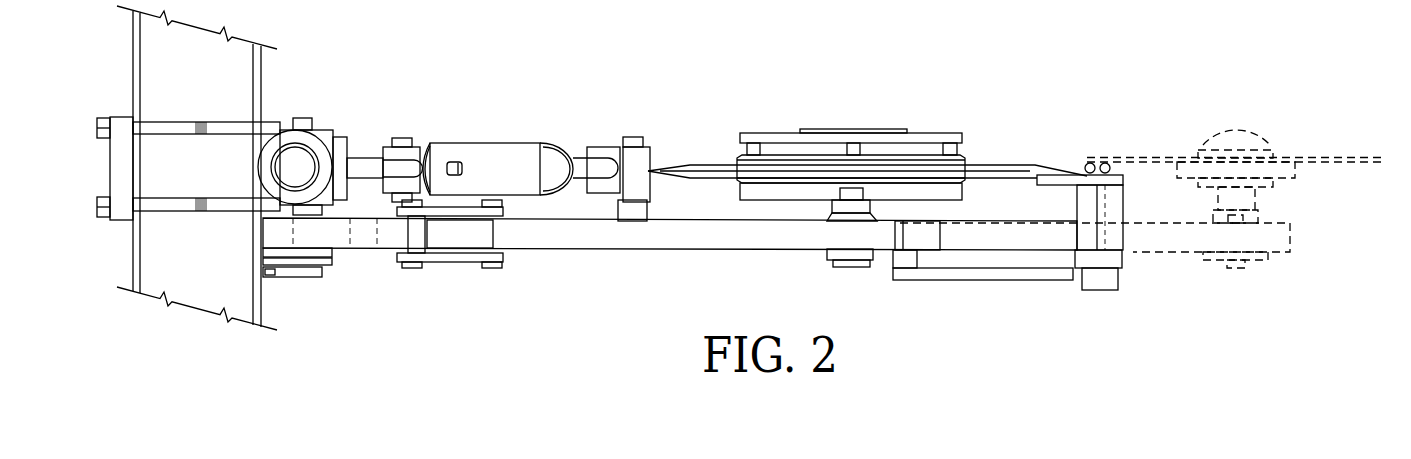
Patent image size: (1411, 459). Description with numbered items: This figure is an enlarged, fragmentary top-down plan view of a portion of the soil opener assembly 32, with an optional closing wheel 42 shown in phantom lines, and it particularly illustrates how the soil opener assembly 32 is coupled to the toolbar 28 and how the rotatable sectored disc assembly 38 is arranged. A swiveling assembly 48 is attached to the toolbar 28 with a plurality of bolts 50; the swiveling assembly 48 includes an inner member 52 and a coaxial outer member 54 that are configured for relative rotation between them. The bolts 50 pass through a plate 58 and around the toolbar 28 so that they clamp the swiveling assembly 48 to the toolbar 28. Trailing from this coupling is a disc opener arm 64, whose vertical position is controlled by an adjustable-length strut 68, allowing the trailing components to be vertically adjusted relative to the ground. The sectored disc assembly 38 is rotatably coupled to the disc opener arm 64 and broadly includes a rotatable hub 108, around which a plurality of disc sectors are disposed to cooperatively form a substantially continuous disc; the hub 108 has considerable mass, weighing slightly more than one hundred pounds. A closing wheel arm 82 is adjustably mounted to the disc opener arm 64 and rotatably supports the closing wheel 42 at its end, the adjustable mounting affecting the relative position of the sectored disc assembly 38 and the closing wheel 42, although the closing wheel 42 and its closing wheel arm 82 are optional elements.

The toolbar 28 is at (220, 61).
The bolts 50 is at (165, 128).
The plate 58 is at (120, 163).
The swiveling assembly 48 is at (338, 130).
The inner member 52 is at (297, 158).
The outer member 54 is at (323, 158).
The adjustable-length strut 68 is at (478, 122).
The sectored disc assembly 38 is at (698, 148).
The soil opener assembly 32 is at (881, 145).
The rotatable hub 108 is at (777, 132).
The disc opener arm 64 is at (783, 240).
The closing wheel 42 is at (1318, 160).
The closing wheel arm 82 is at (1157, 240).